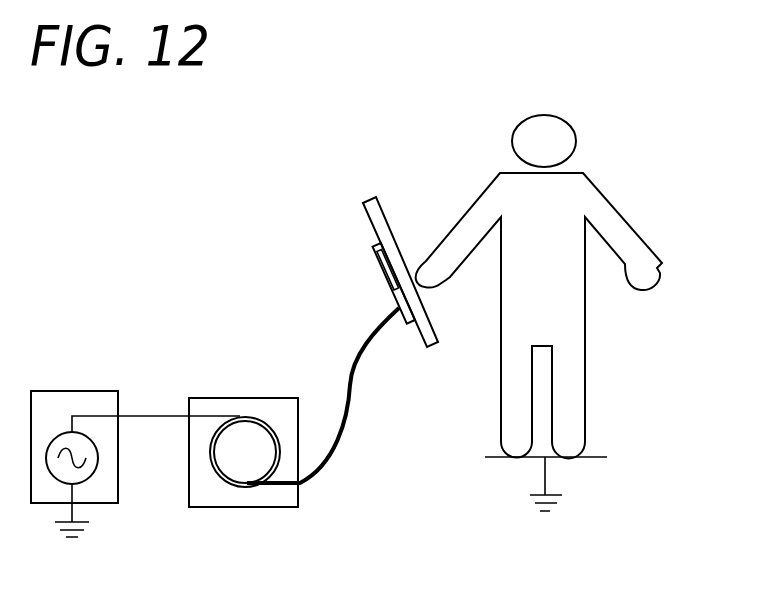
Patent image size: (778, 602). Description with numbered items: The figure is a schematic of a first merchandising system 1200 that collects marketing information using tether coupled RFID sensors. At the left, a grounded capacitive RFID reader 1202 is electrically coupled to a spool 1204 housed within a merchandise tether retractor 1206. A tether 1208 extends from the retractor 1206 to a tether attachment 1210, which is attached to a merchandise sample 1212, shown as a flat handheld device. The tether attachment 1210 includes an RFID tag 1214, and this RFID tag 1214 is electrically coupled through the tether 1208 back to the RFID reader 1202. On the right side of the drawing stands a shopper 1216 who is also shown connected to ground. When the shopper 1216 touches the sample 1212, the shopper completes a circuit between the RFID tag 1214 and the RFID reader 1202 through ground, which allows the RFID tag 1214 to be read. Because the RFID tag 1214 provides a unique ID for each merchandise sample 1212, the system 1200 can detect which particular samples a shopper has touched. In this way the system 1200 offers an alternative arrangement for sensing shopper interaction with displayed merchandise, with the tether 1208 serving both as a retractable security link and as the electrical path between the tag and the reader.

The merchandising system 1200 is at (318, 128).
The grounded capacitive RFID reader 1202 is at (117, 391).
The spool 1204 is at (245, 487).
The merchandise tether retractor 1206 is at (273, 398).
The tether 1208 is at (350, 415).
The tether attachment 1210 is at (371, 243).
The merchandise sample 1212 is at (372, 197).
The RFID tag 1214 is at (377, 263).
The shopper 1216 is at (598, 188).